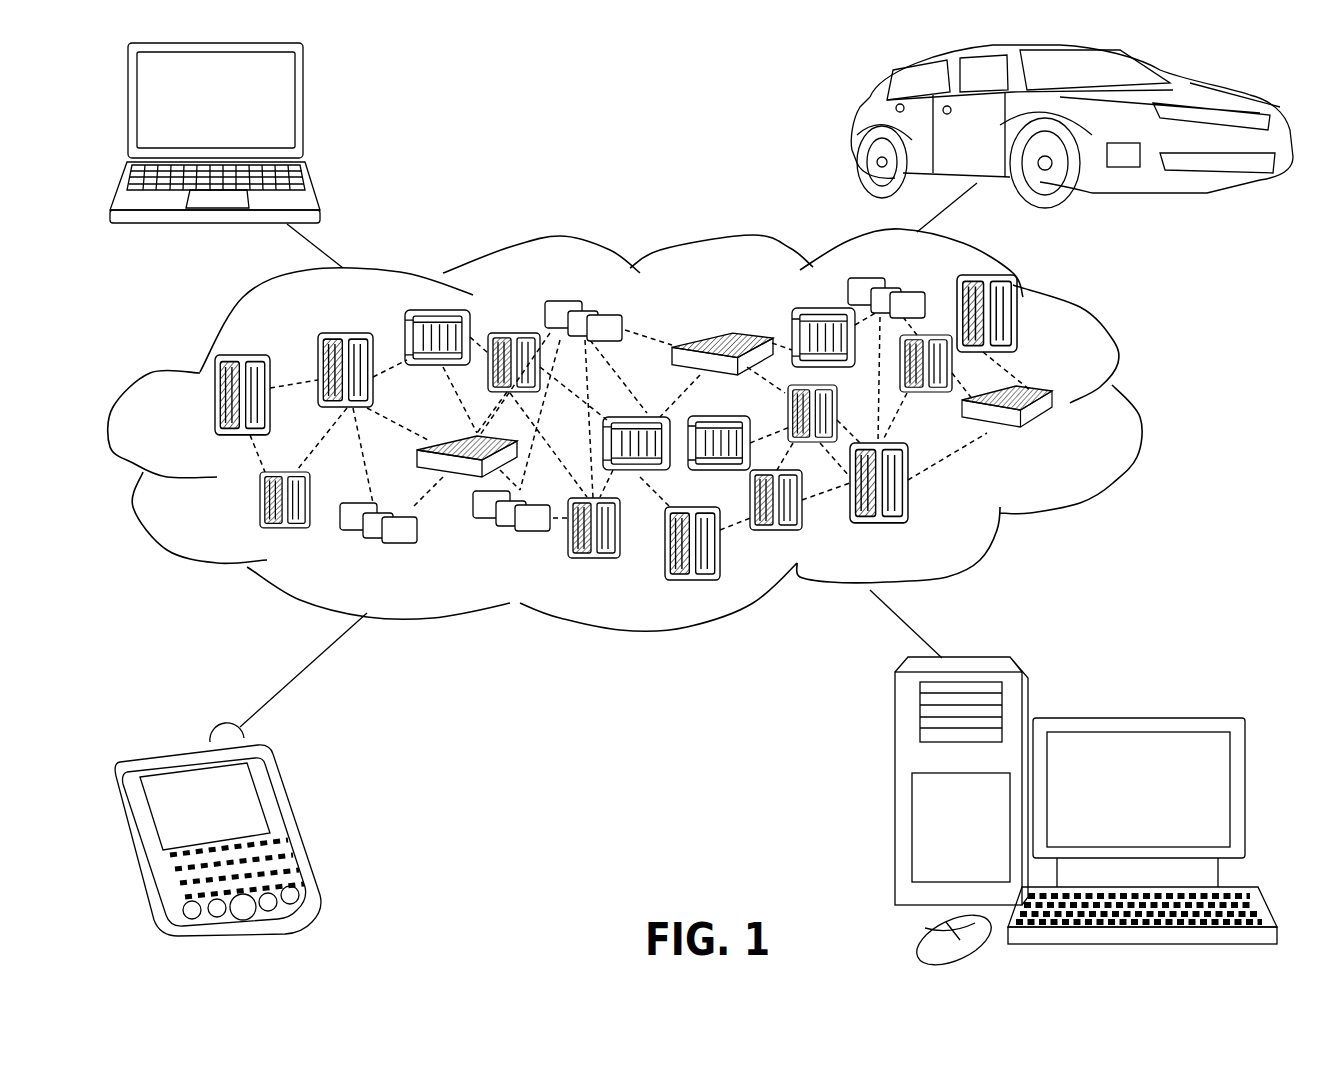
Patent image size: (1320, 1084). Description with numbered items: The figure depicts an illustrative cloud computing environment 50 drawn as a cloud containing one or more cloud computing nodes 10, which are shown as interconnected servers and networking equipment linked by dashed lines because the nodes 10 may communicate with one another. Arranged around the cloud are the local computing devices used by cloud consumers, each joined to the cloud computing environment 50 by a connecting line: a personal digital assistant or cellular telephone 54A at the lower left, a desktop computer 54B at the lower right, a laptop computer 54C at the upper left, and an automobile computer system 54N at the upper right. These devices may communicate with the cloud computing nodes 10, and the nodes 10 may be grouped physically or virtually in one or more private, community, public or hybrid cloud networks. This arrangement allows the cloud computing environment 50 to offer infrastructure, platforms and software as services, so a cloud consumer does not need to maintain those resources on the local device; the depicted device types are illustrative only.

The cloud computing node 10 is at (1060, 440).
The cloud computing environment 50 is at (1137, 403).
The personal digital assistant (PDA) or cellular telephone 54A is at (287, 820).
The desktop computer 54B is at (1135, 718).
The laptop computer 54C is at (303, 108).
The automobile computer system 54N is at (858, 130).